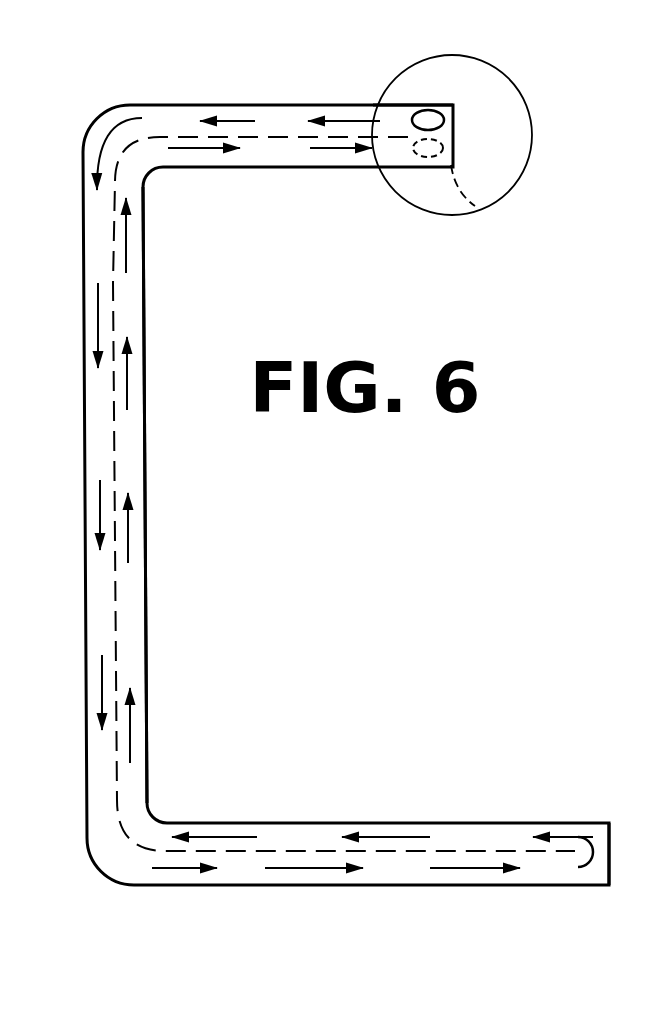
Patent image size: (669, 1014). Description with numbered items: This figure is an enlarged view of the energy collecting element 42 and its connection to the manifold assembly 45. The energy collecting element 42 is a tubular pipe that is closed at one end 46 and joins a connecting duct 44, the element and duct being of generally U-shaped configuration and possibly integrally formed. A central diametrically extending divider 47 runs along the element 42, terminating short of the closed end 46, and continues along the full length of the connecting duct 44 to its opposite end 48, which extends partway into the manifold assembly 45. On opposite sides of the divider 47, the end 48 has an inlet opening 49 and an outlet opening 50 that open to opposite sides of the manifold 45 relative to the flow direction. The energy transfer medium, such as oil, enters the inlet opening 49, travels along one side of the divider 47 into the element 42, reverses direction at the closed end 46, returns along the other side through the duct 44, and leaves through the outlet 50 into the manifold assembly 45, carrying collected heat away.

The energy collecting element 42 is at (415, 822).
The connecting duct 44 is at (145, 483).
The manifold assembly 45 is at (478, 60).
The closed end 46 is at (610, 847).
The divider 47 is at (290, 133).
The opposite end 48 is at (413, 73).
The inlet opening 49 is at (445, 117).
The outlet opening 50 is at (486, 213).